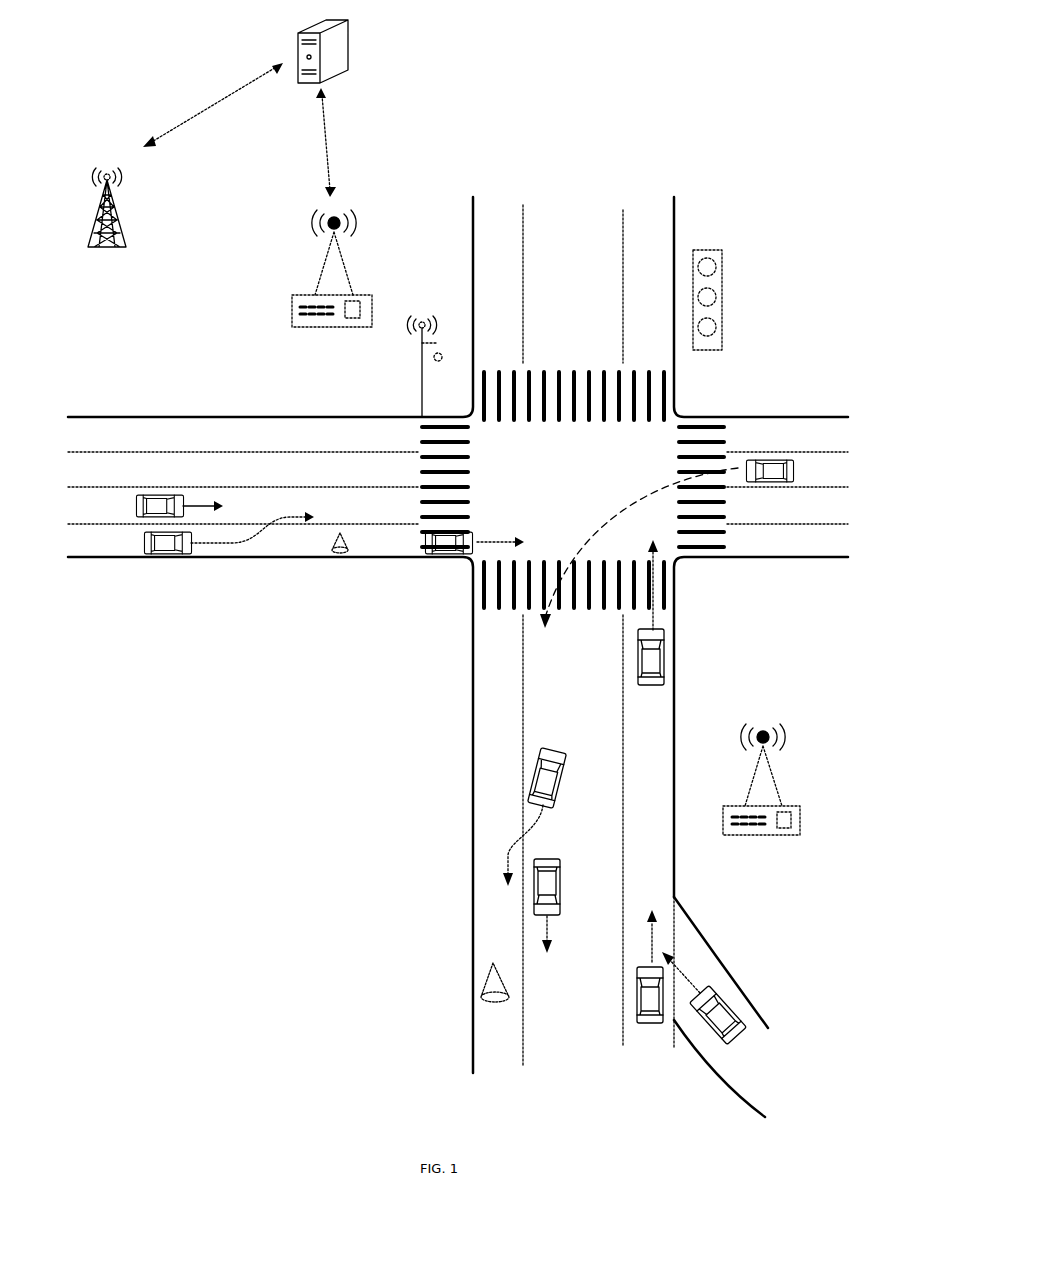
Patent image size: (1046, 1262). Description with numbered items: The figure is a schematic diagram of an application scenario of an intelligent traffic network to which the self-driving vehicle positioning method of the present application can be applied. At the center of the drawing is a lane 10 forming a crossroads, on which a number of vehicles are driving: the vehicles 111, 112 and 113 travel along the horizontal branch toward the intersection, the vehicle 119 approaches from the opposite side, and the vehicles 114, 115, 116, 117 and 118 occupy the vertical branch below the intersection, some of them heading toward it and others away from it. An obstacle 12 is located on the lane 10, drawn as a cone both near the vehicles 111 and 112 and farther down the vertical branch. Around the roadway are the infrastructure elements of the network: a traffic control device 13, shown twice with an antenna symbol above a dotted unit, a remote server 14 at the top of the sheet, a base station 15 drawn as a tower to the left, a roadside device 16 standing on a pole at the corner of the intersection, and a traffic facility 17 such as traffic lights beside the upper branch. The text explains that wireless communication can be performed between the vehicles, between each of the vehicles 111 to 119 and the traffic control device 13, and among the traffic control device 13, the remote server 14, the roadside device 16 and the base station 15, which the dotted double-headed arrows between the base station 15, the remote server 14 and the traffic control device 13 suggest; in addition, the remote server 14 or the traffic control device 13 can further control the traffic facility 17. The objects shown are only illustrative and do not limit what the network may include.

The lane 10 is at (397, 547).
The obstacle 12 is at (337, 555).
The traffic control device 13 is at (320, 273).
The remote server 14 is at (350, 50).
The base station 15 is at (117, 220).
The roadside device 16 is at (420, 367).
The traffic facility 17 is at (708, 250).
The vehicle 111 is at (165, 543).
The vehicle 112 is at (448, 543).
The vehicle 113 is at (152, 493).
The vehicle 114 is at (548, 766).
The vehicle 115 is at (545, 878).
The vehicle 116 is at (655, 660).
The vehicle 117 is at (650, 1003).
The vehicle 118 is at (727, 1020).
The vehicle 119 is at (775, 460).